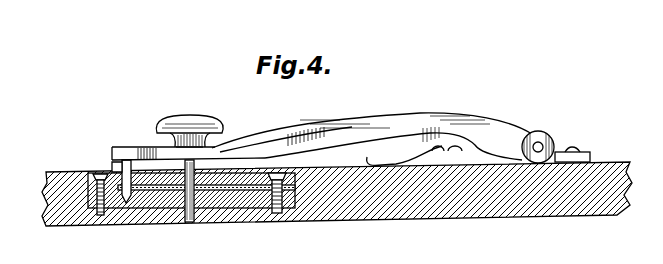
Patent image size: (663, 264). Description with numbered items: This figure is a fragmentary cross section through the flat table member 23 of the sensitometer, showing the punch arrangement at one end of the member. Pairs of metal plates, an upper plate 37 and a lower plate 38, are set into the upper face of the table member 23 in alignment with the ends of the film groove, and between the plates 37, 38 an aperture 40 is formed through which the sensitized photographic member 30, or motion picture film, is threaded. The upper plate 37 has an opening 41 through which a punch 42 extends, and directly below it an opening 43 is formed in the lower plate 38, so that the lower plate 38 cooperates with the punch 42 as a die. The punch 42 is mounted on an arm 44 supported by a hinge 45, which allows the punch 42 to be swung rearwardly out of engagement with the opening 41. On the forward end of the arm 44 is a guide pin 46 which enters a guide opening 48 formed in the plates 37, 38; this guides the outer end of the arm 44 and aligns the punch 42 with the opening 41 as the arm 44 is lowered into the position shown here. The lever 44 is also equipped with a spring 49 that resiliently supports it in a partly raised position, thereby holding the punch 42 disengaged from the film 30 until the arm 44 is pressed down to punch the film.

The table member 23 is at (378, 218).
The sensitized photographic member 30 is at (157, 209).
The upper plate 37 is at (257, 171).
The lower plate 38 is at (266, 169).
The aperture 40 is at (243, 186).
The opening 41 is at (197, 172).
The punch 42 is at (183, 172).
The opening 43 is at (195, 196).
The arm 44 is at (405, 125).
The hinge 45 is at (540, 146).
The guide pin 46 is at (122, 170).
The guide opening 48 is at (126, 199).
The spring 49 is at (377, 164).